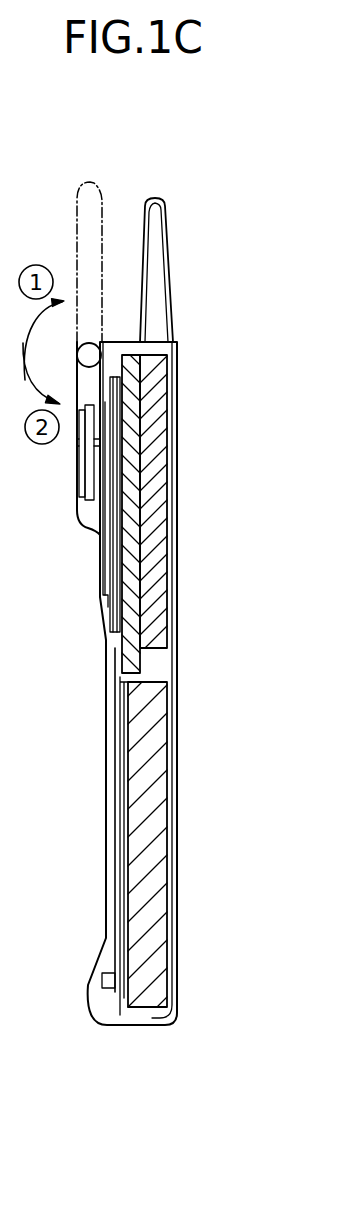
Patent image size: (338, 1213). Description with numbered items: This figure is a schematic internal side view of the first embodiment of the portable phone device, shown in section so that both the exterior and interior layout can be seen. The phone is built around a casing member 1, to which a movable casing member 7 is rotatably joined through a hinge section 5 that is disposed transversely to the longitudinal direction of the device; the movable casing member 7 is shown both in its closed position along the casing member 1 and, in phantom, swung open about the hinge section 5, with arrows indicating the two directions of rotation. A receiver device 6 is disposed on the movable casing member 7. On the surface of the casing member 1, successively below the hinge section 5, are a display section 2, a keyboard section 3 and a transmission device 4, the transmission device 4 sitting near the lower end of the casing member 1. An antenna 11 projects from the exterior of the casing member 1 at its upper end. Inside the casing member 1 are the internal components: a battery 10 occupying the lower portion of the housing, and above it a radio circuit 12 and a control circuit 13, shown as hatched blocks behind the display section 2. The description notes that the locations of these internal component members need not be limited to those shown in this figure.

The casing member 1 is at (175, 403).
The display section 2 is at (103, 567).
The keyboard section 3 is at (110, 778).
The transmission device 4 is at (102, 982).
The hinge section 5 is at (78, 355).
The receiver device 6 is at (82, 483).
The movable casing member 7 is at (87, 182).
The battery 10 is at (160, 815).
The antenna 11 is at (167, 220).
The radio circuit 12 is at (157, 543).
The control circuit 13 is at (133, 605).